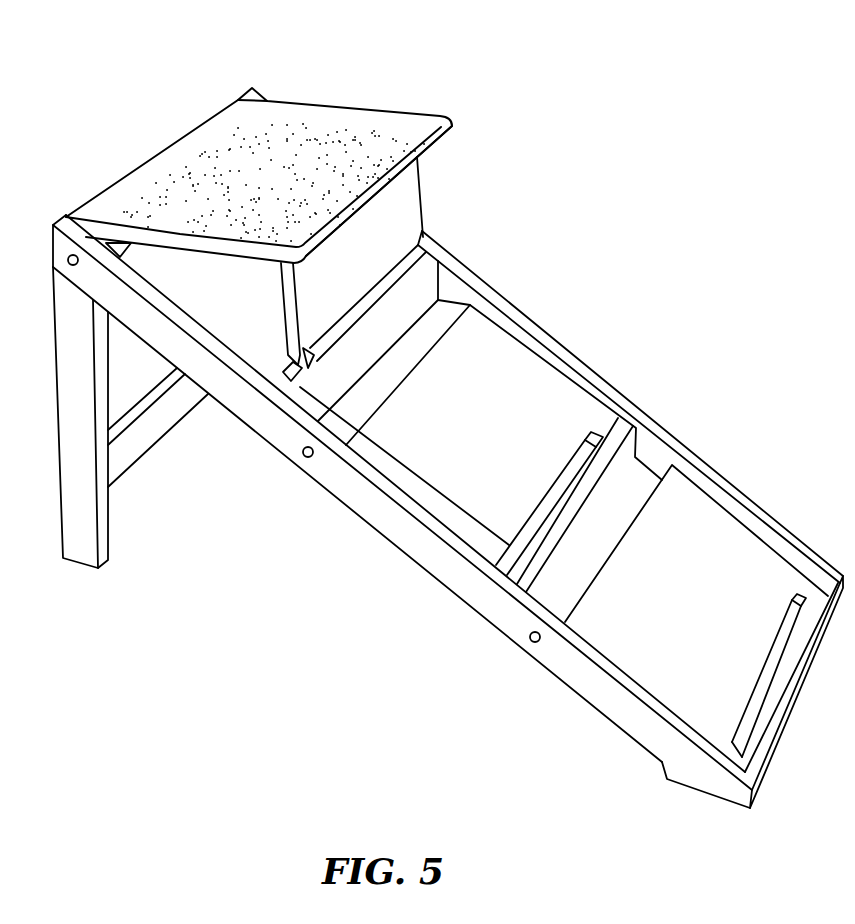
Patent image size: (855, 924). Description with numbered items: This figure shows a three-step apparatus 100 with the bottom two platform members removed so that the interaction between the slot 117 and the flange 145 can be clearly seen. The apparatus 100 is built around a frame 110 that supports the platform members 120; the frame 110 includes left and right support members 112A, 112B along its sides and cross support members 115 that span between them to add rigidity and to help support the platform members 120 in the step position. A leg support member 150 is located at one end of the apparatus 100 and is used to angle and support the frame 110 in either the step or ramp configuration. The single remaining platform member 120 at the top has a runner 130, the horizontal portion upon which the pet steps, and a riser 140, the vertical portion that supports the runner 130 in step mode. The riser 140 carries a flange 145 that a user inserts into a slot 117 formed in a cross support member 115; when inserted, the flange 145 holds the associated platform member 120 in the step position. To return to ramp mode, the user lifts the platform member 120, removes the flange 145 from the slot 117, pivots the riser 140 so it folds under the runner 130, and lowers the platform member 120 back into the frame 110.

The apparatus 100 is at (638, 134).
The frame 110 is at (705, 778).
The left support member 112A is at (615, 695).
The right support member 112B is at (710, 470).
The cross support member 115 is at (479, 417).
The slot 117 is at (573, 455).
The platform member 120 is at (448, 83).
The runner 130 is at (273, 149).
The riser 140 is at (408, 200).
The flange 145 is at (313, 353).
The leg support member 150 is at (100, 538).